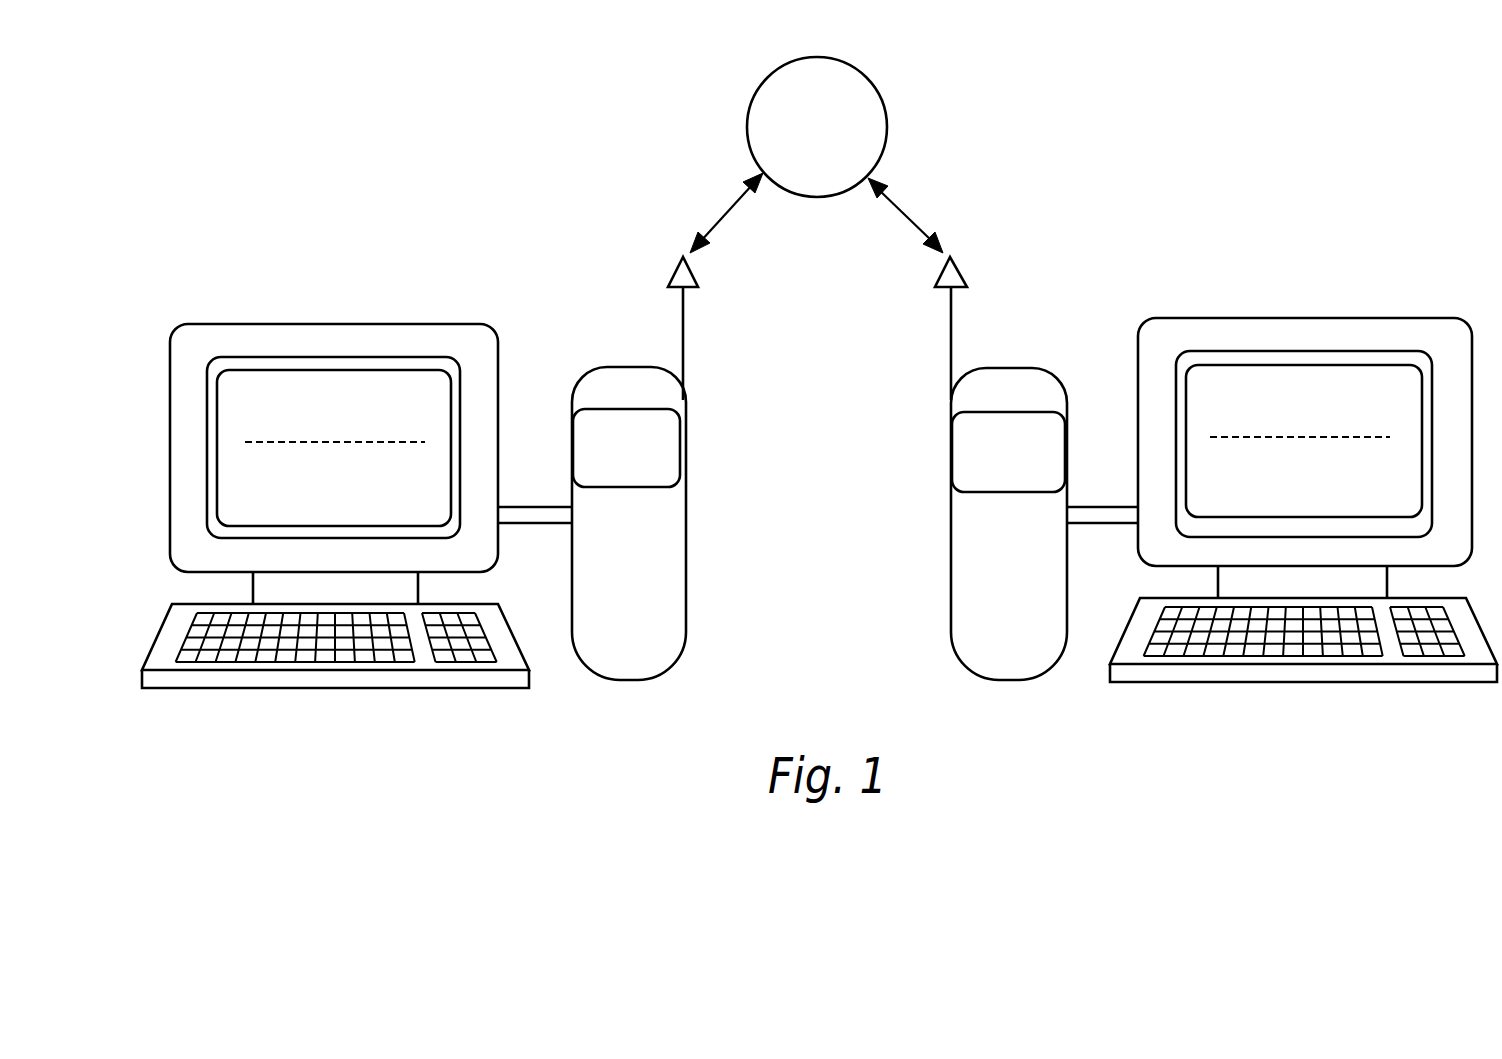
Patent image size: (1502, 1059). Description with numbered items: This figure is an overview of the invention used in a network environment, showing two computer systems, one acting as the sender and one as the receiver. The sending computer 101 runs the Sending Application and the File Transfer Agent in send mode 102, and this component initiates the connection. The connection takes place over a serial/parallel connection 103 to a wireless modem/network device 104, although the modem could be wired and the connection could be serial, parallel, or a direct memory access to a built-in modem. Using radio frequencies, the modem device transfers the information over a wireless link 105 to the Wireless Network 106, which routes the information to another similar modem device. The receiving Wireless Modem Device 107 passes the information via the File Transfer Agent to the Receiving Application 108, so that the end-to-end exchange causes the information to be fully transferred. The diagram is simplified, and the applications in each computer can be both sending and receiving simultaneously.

The sending computer 101 is at (317, 332).
The Sending Application and File Transfer Agent in send mode 102 is at (403, 380).
The serial/parallel connection 103 is at (541, 516).
The wireless modem/network device 104 is at (627, 380).
The wireless link 105 is at (727, 212).
The Wireless Network 106 is at (868, 77).
The receiving Wireless Modem Device 107 is at (1017, 383).
The Receiving Application 108 is at (1282, 378).